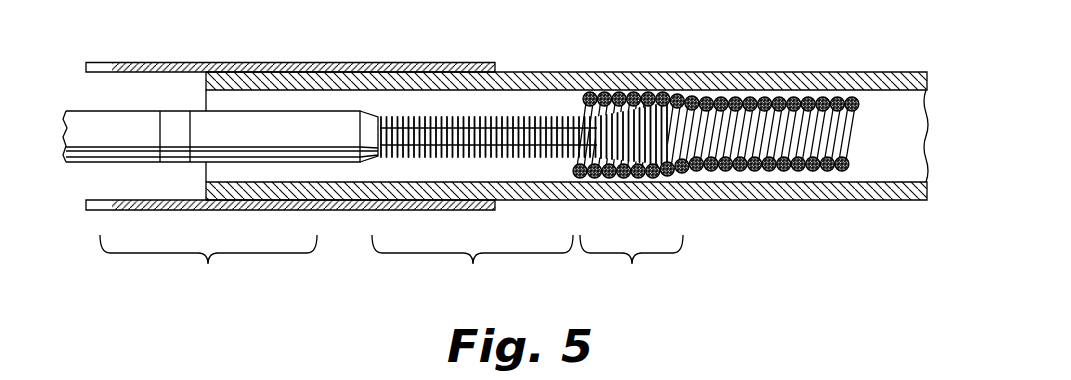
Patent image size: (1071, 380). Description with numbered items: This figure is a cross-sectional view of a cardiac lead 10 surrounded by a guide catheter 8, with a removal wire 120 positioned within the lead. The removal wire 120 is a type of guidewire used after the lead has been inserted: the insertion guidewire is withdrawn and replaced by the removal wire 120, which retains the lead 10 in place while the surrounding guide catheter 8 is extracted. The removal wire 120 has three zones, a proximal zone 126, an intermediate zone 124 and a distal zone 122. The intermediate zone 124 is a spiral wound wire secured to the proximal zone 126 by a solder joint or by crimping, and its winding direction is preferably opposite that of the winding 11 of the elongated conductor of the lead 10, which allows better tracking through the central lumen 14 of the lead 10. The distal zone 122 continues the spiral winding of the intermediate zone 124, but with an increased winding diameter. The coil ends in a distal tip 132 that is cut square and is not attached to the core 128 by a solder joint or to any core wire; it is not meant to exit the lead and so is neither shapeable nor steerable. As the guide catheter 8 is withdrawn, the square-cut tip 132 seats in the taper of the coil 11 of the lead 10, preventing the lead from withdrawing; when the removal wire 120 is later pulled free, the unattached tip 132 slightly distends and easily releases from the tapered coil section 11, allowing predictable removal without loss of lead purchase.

The guide catheter 8 is at (388, 62).
The lead 10 is at (350, 192).
The removal wire 120 is at (77, 163).
The proximal zone 126 is at (208, 271).
The intermediate zone 124 is at (520, 205).
The core 128 is at (550, 155).
The distal zone 122 is at (716, 203).
The distal tip 132 is at (670, 148).
The winding 11 is at (800, 172).
The central lumen 14 is at (853, 168).